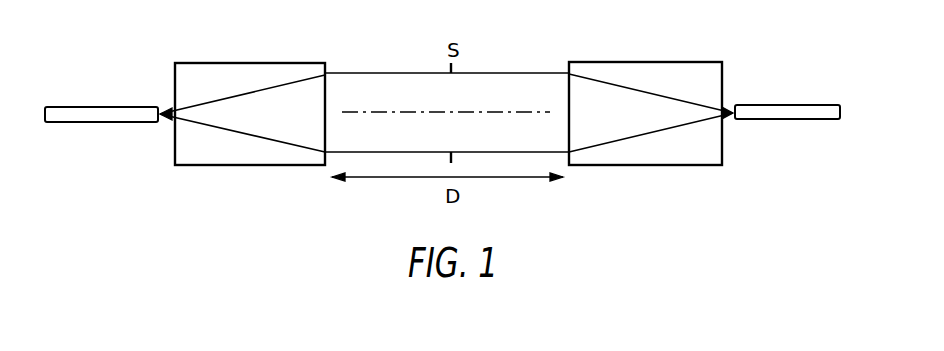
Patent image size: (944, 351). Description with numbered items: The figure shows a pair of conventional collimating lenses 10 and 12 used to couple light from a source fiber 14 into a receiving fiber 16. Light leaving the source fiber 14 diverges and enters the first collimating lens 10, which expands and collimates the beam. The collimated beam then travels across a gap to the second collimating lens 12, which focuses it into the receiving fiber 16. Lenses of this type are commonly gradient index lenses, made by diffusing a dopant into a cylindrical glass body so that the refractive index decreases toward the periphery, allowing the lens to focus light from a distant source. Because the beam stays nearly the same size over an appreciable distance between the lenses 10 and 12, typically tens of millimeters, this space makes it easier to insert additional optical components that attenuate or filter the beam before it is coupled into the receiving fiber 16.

The collimating lens 10 is at (216, 73).
The collimating lens 12 is at (644, 72).
The source fiber 14 is at (103, 117).
The receiving fiber 16 is at (790, 105).